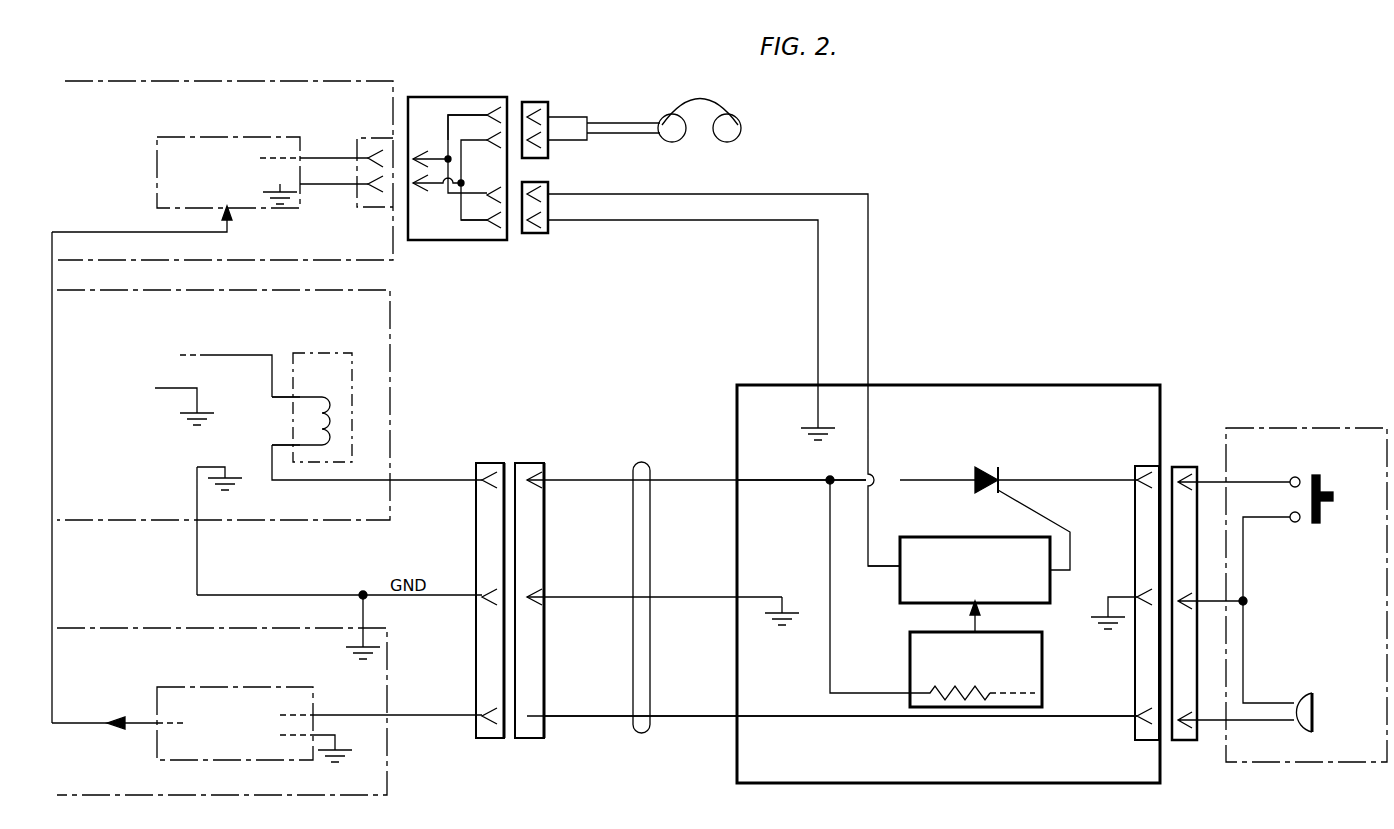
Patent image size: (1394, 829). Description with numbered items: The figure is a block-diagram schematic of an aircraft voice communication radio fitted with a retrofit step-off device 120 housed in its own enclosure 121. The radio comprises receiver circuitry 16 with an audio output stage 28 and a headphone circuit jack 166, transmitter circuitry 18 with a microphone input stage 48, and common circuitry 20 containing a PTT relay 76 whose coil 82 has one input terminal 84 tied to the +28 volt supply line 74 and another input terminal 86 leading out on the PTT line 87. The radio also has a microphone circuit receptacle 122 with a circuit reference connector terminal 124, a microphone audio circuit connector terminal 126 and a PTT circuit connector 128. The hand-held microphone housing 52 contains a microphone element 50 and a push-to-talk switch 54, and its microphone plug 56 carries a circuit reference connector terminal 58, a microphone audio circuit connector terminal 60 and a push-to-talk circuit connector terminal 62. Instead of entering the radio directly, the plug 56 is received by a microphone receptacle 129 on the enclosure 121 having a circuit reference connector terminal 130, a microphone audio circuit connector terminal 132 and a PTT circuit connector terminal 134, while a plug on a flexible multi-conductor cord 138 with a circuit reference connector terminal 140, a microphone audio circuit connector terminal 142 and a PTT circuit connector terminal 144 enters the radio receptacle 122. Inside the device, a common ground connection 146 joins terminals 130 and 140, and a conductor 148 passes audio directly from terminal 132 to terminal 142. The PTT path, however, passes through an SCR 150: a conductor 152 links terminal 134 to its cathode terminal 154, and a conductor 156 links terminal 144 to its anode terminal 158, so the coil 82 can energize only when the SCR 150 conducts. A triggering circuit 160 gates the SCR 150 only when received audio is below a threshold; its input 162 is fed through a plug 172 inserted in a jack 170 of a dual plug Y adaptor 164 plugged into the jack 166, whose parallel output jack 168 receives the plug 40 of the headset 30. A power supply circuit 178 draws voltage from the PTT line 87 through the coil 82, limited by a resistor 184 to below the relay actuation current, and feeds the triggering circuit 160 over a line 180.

The receiver circuitry 16 is at (352, 82).
The audio output stage 28 is at (285, 138).
The headphone circuit jack 166 is at (373, 137).
The dual plug Y adaptor 164 is at (437, 97).
The output jack 168 is at (469, 104).
The jack 170 is at (461, 234).
The plug 40 is at (540, 102).
The headset 30 is at (700, 101).
The plug 172 is at (537, 234).
The common circuitry 20 is at (390, 312).
The +28 volt supply line 74 is at (243, 356).
The coil 82 is at (324, 397).
The PTT relay 76 is at (350, 455).
The input terminal 84 is at (275, 398).
The input terminal 86 is at (272, 445).
The PTT line 87 is at (362, 482).
The microphone circuit receptacle 122 is at (497, 462).
The PTT circuit connector 128 is at (483, 484).
The circuit reference connector terminal 124 is at (484, 600).
The microphone audio circuit connector terminal 126 is at (478, 730).
The transmitter circuitry 18 is at (400, 701).
The microphone input stage 48 is at (315, 711).
The PTT circuit connector terminal 144 is at (540, 488).
The circuit reference connector terminal 140 is at (540, 592).
The microphone audio circuit connector terminal 142 is at (538, 738).
The flexible multi-conductor cord 138 is at (651, 460).
The conductor 156 is at (786, 481).
The common ground connection 146 is at (790, 610).
The enclosure 121 is at (991, 385).
The step-off device 120 is at (1134, 404).
The anode terminal 158 is at (973, 481).
The SCR 150 is at (973, 477).
The cathode terminal 154 is at (1028, 482).
The conductor 152 is at (1087, 482).
The microphone receptacle 129 is at (1140, 466).
The PTT circuit connector terminal 134 is at (1133, 486).
The circuit reference connector terminal 130 is at (1137, 595).
The microphone audio circuit connector terminal 132 is at (1137, 712).
The triggering circuit 160 is at (911, 537).
The input 162 is at (890, 568).
The line 180 is at (968, 622).
The power supply circuit 178 is at (910, 654).
The resistor 184 is at (968, 707).
The conductor 148 is at (875, 718).
The hand-held microphone housing 52 is at (1257, 428).
The push-to-talk switch 54 is at (1332, 469).
The microphone plug 56 is at (1182, 467).
The push-to-talk circuit connector terminal 62 is at (1183, 490).
The circuit reference connector terminal 58 is at (1185, 592).
The microphone audio circuit connector terminal 60 is at (1182, 742).
The microphone element 50 is at (1312, 700).